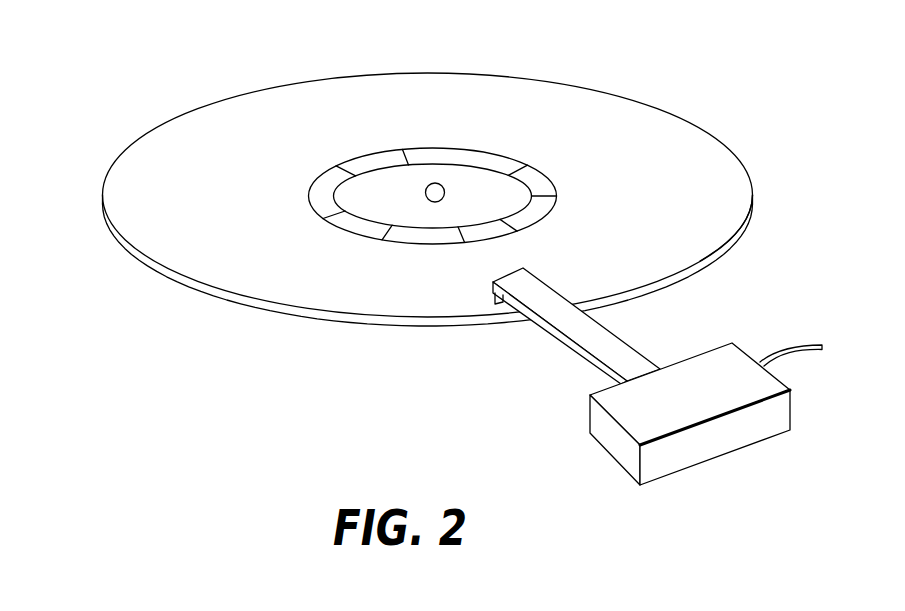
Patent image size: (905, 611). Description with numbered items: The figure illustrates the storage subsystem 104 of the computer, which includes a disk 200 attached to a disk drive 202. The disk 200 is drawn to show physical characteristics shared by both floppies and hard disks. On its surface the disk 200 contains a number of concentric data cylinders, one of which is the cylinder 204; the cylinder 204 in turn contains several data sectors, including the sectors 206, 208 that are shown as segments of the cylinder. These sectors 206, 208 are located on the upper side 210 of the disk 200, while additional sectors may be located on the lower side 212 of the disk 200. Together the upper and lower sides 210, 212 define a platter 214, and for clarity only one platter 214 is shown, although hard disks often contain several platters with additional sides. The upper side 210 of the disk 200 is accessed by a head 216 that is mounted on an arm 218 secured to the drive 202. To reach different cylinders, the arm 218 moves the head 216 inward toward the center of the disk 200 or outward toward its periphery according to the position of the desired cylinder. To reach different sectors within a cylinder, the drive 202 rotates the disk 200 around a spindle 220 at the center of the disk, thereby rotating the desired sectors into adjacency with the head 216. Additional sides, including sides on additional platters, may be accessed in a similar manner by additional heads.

The storage subsystem 104 is at (102, 50).
The disk 200 is at (462, 186).
The disk drive 202 is at (658, 415).
The cylinder 204 is at (391, 170).
The sector 206 is at (409, 184).
The sector 208 is at (389, 195).
The upper side 210 is at (428, 181).
The lower side 212 is at (760, 248).
The platter 214 is at (432, 260).
The head 216 is at (445, 338).
The arm 218 is at (523, 340).
The spindle 220 is at (494, 160).